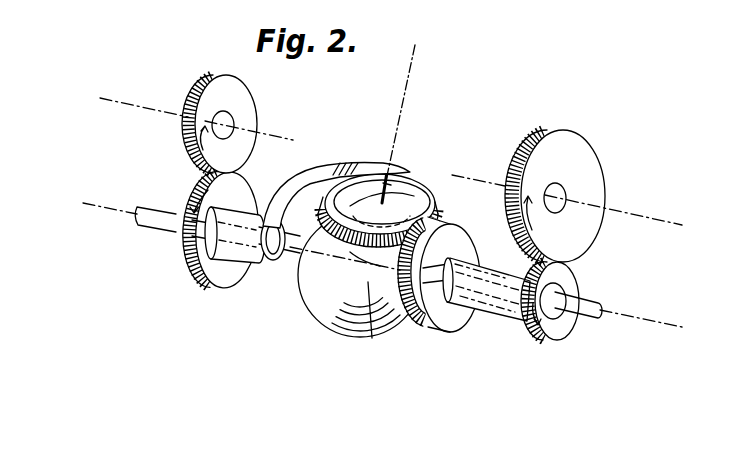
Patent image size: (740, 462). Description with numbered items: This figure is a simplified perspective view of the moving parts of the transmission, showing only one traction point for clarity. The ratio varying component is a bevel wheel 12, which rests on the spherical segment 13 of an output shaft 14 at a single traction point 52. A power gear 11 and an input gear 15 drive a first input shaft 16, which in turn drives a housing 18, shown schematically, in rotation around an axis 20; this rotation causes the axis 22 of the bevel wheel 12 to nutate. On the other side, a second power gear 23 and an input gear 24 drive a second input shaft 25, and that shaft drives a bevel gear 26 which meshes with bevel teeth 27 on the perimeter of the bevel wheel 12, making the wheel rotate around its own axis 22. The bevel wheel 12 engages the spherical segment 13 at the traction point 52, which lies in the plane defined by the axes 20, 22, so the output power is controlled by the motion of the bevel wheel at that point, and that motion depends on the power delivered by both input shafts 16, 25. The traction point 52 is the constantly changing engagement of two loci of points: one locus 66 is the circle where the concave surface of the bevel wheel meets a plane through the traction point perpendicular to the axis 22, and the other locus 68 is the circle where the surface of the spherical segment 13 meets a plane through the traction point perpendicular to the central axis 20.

The power gear 11 is at (222, 80).
The bevel wheel 12 is at (410, 185).
The spherical segment 13 is at (323, 303).
The output shaft 14 is at (148, 222).
The input gear 15 is at (235, 188).
The first input shaft 16 is at (226, 284).
The housing 18 is at (355, 163).
The axis 20 is at (125, 213).
The axis of the bevel wheel 22 is at (408, 80).
The second power gear 23 is at (572, 147).
The input gear 24 is at (548, 335).
The second input shaft 25 is at (500, 305).
The bevel gear 26 is at (447, 330).
The bevel teeth 27 is at (355, 243).
The traction point 52 is at (430, 205).
The locus of points 66 is at (407, 197).
The locus of points 68 is at (346, 335).